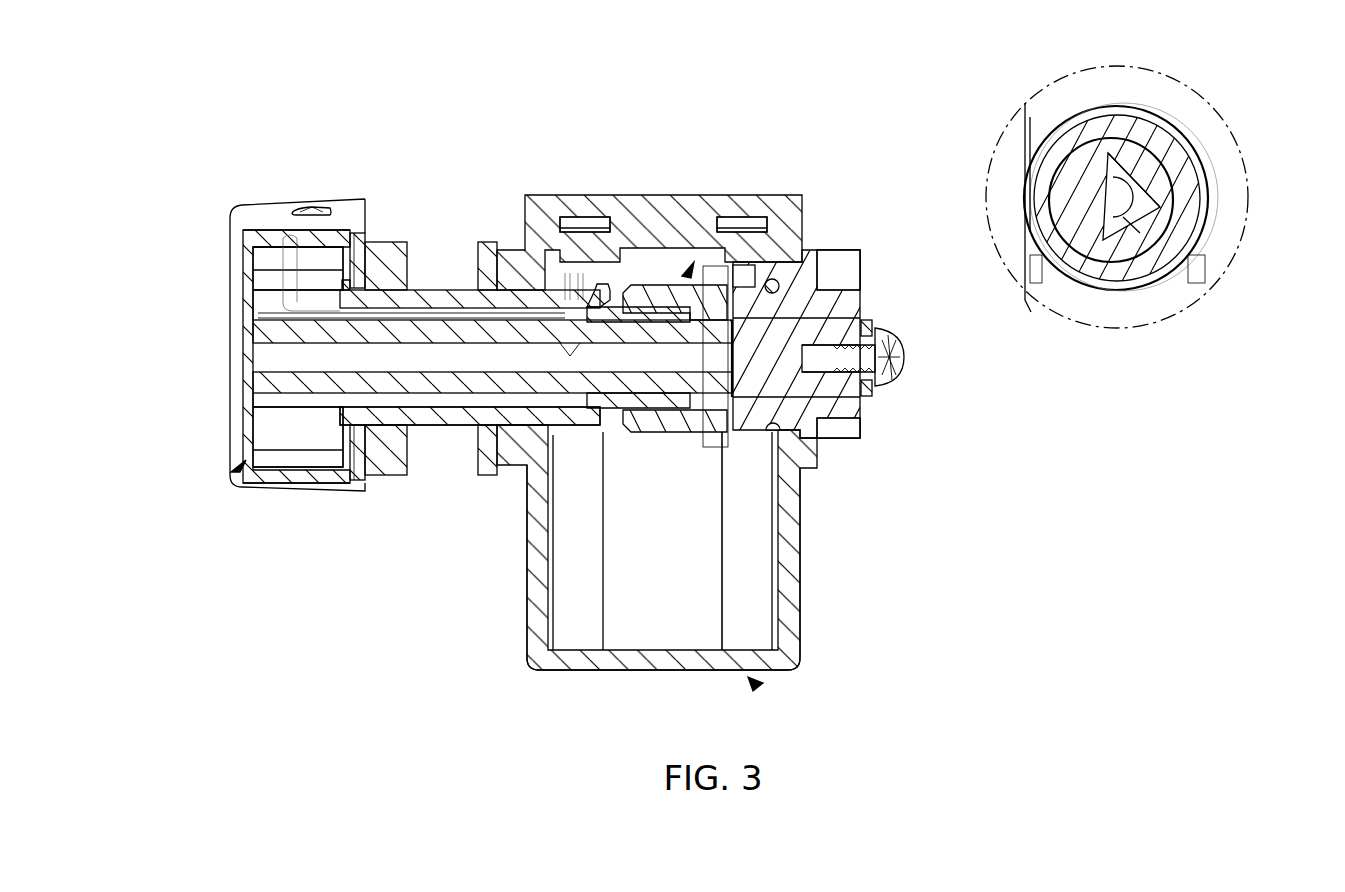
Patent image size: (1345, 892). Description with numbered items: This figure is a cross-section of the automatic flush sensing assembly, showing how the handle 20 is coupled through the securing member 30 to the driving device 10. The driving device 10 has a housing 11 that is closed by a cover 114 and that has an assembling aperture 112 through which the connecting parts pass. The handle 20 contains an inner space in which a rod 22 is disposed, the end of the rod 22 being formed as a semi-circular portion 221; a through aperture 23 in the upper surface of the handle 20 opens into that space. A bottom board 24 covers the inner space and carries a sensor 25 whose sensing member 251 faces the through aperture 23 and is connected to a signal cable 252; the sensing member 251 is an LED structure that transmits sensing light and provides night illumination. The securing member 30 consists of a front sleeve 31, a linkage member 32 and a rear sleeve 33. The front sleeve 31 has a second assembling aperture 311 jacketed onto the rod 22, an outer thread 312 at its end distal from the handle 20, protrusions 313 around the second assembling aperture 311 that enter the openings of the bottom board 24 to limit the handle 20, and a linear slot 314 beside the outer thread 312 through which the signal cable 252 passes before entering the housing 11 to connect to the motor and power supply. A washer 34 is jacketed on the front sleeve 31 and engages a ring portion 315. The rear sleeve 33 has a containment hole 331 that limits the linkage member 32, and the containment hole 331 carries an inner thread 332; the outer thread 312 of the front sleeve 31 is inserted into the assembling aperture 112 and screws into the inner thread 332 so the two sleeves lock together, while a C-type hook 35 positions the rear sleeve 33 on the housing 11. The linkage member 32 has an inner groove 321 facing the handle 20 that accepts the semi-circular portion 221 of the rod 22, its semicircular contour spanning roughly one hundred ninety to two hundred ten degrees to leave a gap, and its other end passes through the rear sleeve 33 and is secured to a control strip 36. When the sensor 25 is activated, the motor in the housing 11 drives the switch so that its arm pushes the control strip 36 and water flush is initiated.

The driving device 10 is at (756, 680).
The housing 11 is at (535, 633).
The assembling aperture 112 is at (552, 470).
The cover 114 is at (703, 204).
The handle 20 is at (236, 470).
The rod 22 is at (447, 385).
The semi-circular portion 221 is at (1165, 168).
The through aperture 23 is at (330, 205).
The bottom board 24 is at (363, 485).
The sensor 25 is at (280, 282).
The sensing member 251 is at (313, 205).
The signal cable 252 is at (265, 317).
The securing member 30 is at (684, 274).
The front sleeve 31 is at (447, 297).
The second assembling aperture 311 is at (490, 408).
The outer thread 312 is at (647, 300).
The protrusions 313 is at (340, 440).
The linear slot 314 is at (566, 290).
The ring portion 315 is at (403, 245).
The linkage member 32 is at (860, 398).
The inner groove 321 is at (1067, 175).
The rear sleeve 33 is at (838, 399).
The containment hole 331 is at (757, 425).
The inner thread 332 is at (876, 320).
The washer 34 is at (488, 250).
The C-type hook 35 is at (1202, 253).
The control strip 36 is at (877, 393).